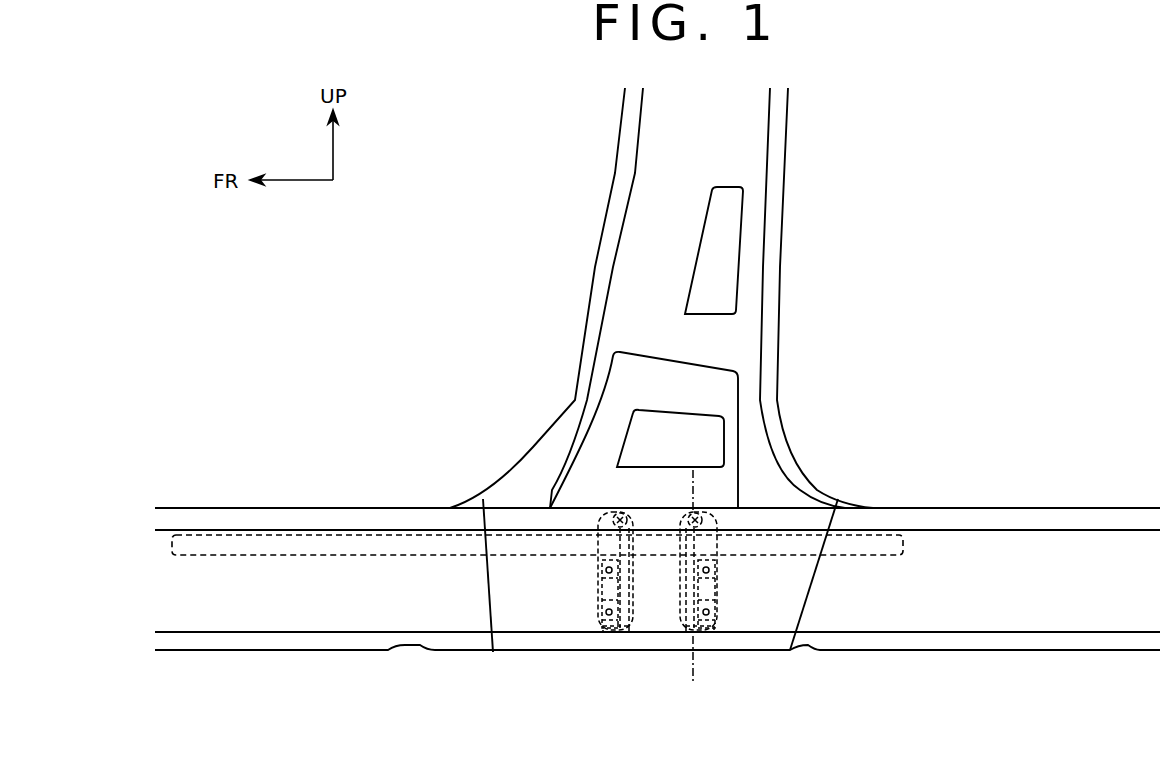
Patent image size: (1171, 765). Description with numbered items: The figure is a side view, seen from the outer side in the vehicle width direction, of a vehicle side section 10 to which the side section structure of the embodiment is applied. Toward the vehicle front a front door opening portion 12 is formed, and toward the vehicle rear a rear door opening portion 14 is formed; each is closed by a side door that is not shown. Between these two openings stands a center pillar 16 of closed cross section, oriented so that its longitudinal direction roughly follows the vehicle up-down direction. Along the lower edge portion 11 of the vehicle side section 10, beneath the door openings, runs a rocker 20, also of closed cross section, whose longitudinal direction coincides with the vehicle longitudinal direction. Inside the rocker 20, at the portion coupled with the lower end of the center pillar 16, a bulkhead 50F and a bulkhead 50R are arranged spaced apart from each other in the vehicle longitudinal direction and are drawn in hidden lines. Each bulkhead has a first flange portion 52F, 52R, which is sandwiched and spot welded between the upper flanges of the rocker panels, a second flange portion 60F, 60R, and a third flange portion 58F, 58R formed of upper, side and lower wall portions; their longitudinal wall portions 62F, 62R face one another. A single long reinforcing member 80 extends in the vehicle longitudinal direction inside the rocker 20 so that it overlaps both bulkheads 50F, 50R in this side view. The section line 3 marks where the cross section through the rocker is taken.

The vehicle side section 10 is at (893, 152).
The lower edge portion 11 is at (1015, 505).
The front door opening portion 12 is at (373, 258).
The rear door opening portion 14 is at (1014, 255).
The center pillar 16 is at (783, 210).
The rocker 20 is at (940, 505).
The reinforcing member 80 is at (889, 535).
The bulkhead 50F is at (607, 633).
The bulkhead 50R is at (712, 633).
The first flange portion 52F is at (616, 512).
The first flange portion 52R is at (701, 516).
The third flange portion 58F is at (597, 574).
The third flange portion 58R is at (718, 574).
The second flange portion 60F is at (630, 512).
The second flange portion 60R is at (665, 578).
The longitudinal wall portion 62F is at (623, 642).
The longitudinal wall portion 62R is at (687, 642).
The section line 3- 3 is at (705, 583).